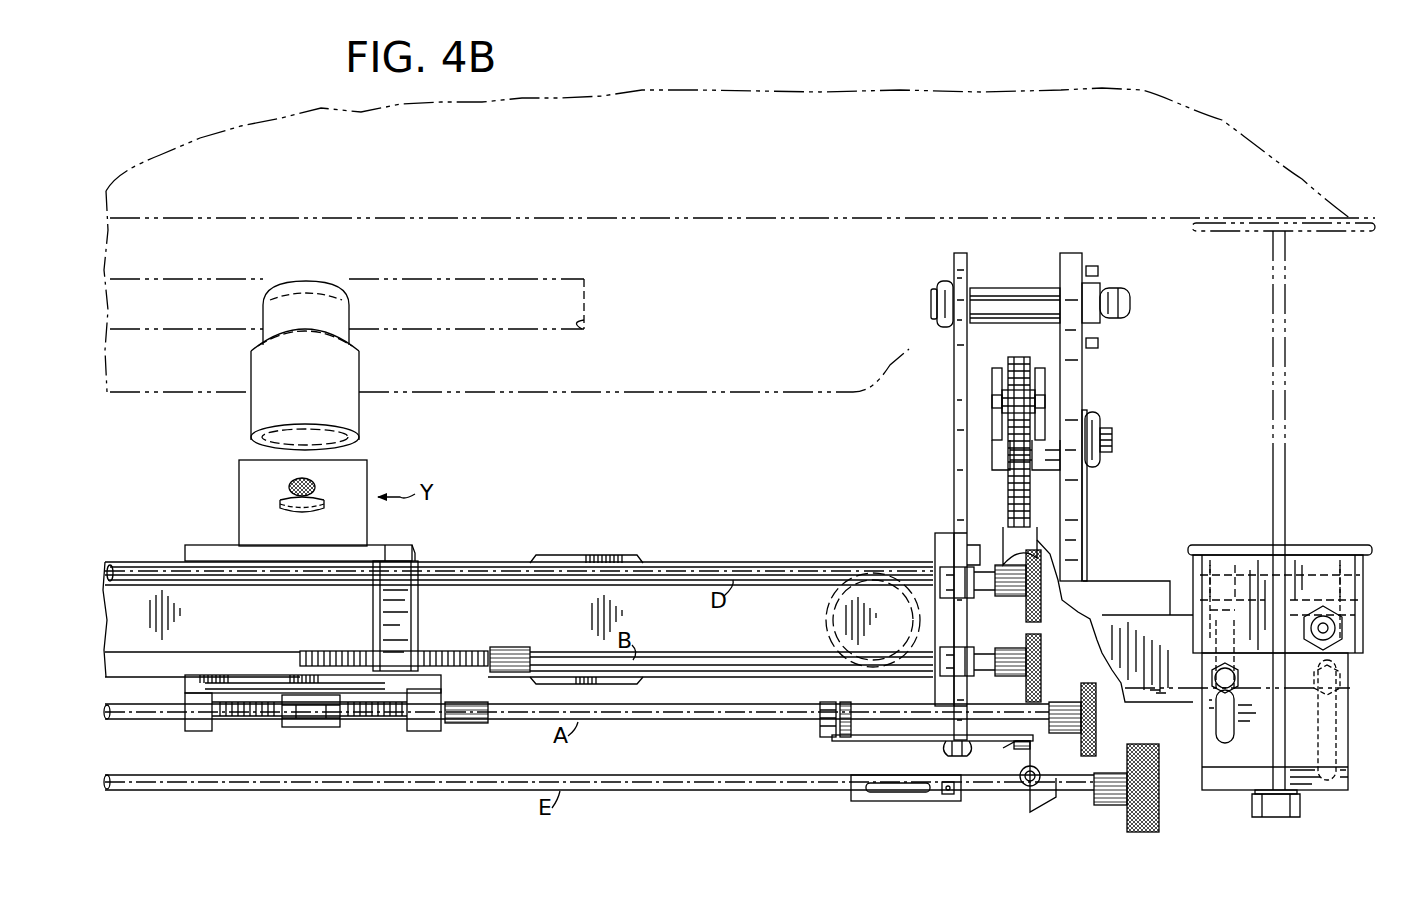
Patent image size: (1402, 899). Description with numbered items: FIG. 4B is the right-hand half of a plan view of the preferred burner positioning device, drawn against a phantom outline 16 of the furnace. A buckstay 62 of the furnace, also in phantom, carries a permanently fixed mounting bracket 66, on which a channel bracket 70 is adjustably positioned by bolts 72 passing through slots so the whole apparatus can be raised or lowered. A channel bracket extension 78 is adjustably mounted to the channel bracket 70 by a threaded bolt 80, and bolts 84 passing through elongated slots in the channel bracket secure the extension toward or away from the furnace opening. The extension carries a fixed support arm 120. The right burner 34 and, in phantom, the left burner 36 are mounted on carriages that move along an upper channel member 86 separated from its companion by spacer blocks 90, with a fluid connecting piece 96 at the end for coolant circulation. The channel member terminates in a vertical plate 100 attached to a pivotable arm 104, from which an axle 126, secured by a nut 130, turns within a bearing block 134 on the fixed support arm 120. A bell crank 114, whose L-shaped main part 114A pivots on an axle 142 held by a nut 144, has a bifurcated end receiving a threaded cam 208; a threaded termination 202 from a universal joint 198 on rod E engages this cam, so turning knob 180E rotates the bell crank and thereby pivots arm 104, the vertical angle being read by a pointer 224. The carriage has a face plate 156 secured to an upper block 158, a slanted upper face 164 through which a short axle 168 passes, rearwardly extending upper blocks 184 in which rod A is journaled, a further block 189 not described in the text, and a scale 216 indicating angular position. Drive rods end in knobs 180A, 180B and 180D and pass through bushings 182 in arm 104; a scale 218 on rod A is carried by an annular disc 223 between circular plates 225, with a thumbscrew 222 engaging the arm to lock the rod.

The frame 16 is at (646, 82).
The left burner 36 is at (586, 326).
The right burner 34 is at (364, 424).
The slanted upper face 164 is at (245, 492).
The short axle 168 is at (314, 489).
The face plate 156 is at (415, 548).
The upper block 158 is at (418, 607).
The spacer blocks 90 is at (576, 555).
The upper channel member 86 is at (672, 619).
The fluid connecting piece 96 is at (824, 621).
The scale 216 is at (250, 685).
The upper blocks 184 is at (200, 731).
The slide block 189 is at (322, 727).
The pivotable arm 104 is at (954, 465).
The vertical plate 100 is at (935, 535).
The bushings 182 is at (955, 607).
The manually operable knob 180D is at (1041, 612).
The manually operable knob 180B is at (1041, 652).
The manually operable knob 180A is at (1096, 722).
The manually operable knob 180E is at (1152, 836).
The scale 218 is at (862, 742).
The thumbscrew 222 is at (946, 750).
The annular disc 223 is at (820, 712).
The circular plates 225 is at (851, 710).
The universal joint 198 is at (1010, 806).
The fixed support arm 120 is at (1083, 494).
The pointer 224 is at (1087, 548).
The axle 126 is at (1015, 290).
The nut 130 is at (937, 292).
The bearing block 134 is at (1100, 272).
The threaded termination 202 is at (1030, 342).
The threaded cam 208 is at (1002, 398).
The L-shaped main part 114A is at (992, 430).
The bell crank 114 is at (1012, 540).
The nut 144 is at (1093, 430).
The axle 142 is at (1112, 442).
The channel bracket extension 78 is at (1150, 620).
The buckstay 62 is at (1290, 430).
The mounting bracket 66 is at (1238, 546).
The channel bracket 70 is at (1348, 742).
The bolts 72 is at (1196, 568).
The bolts 84 is at (1232, 675).
The threaded bolt 80 is at (1258, 808).